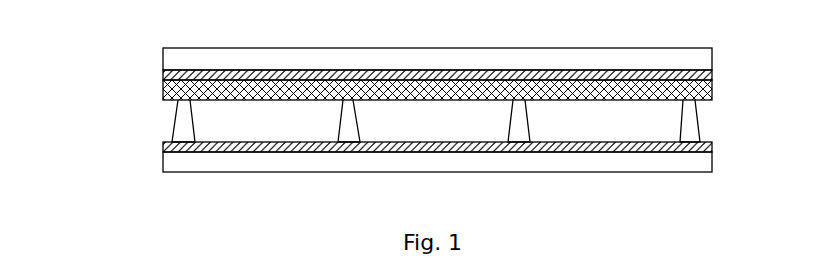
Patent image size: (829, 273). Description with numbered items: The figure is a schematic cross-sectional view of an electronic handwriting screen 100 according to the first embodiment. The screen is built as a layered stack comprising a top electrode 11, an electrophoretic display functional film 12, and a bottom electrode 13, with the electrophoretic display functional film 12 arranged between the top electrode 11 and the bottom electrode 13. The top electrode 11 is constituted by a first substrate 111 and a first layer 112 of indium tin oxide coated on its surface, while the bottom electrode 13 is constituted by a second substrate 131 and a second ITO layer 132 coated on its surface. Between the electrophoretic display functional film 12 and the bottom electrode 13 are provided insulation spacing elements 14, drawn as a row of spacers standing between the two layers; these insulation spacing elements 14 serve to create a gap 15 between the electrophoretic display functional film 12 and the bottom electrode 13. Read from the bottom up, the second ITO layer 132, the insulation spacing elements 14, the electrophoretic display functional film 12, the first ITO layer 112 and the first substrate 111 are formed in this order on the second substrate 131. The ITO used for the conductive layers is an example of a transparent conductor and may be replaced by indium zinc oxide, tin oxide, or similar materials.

The electronic handwriting screen 100 is at (758, 28).
The top electrode 11 is at (63, 48).
The first substrate 111 is at (163, 57).
The first layer of indium tin oxide 112 is at (163, 74).
The electrophoretic display functional film 12 is at (706, 90).
The bottom electrode 13 is at (63, 138).
The second substrate 131 is at (163, 148).
The second ITO layer 132 is at (163, 167).
The insulation spacing elements 14 is at (692, 132).
The gap 15 is at (612, 132).